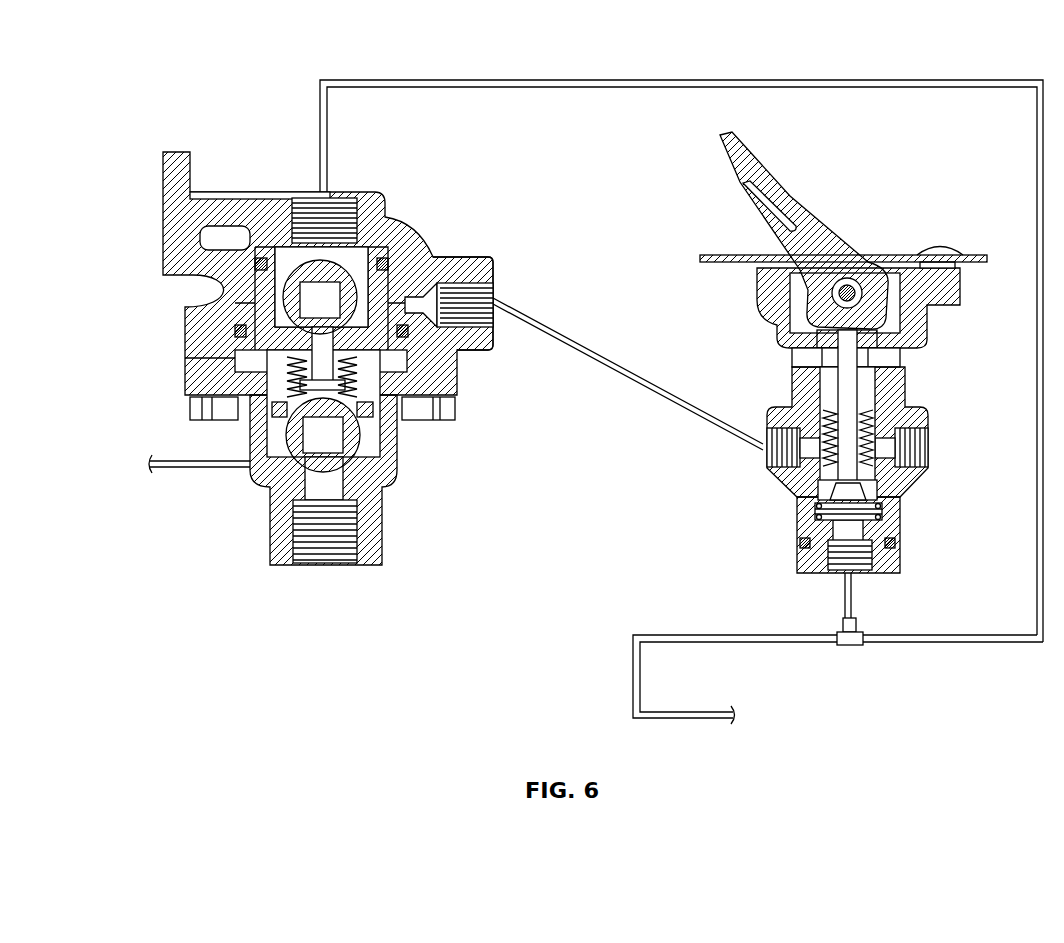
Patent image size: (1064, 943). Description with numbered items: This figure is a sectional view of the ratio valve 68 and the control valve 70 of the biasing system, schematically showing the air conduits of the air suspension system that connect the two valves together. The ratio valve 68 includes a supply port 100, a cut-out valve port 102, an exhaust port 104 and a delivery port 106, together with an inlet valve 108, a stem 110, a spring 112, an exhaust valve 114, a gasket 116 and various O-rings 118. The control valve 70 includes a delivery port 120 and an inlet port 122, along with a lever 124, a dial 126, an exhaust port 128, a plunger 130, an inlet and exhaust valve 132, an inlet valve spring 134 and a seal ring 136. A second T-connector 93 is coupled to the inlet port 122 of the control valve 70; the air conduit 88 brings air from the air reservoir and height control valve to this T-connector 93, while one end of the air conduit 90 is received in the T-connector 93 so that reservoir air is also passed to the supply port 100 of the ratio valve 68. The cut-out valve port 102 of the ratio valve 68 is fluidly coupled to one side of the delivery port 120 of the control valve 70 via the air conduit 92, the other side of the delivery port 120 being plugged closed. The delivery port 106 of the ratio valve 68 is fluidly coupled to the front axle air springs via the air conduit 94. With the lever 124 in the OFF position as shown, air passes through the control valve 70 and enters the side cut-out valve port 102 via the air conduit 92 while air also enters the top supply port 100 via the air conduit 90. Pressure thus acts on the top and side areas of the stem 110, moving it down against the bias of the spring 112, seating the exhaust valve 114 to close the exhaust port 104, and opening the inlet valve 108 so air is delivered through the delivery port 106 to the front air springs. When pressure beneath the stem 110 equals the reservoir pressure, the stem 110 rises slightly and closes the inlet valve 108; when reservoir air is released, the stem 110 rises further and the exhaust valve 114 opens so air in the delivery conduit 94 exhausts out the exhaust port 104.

The ratio valve 68 is at (268, 114).
The control valve 70 is at (902, 150).
The air conduit 88 is at (690, 720).
The air conduit 90 is at (462, 80).
The air conduit 92 is at (588, 378).
The second T-connector 93 is at (848, 645).
The air conduit 94 is at (187, 465).
The supply port 100 is at (338, 193).
The cut-out valve port 102 is at (500, 298).
The exhaust port 104 is at (328, 567).
The delivery port 106 is at (250, 470).
The inlet valve 108 is at (300, 272).
The stem 110 is at (297, 340).
The spring 112 is at (353, 395).
The exhaust valve 114 is at (345, 433).
The gasket 116 is at (183, 357).
The O-rings 118 is at (388, 267).
The delivery port 120 is at (767, 440).
The inlet port 122 is at (886, 586).
The lever 124 is at (770, 183).
The dial 126 is at (875, 257).
The exhaust port 128 is at (900, 358).
The plunger 130 is at (873, 412).
The inlet and exhaust valve 132 is at (875, 490).
The inlet valve spring 134 is at (817, 512).
The seal ring 136 is at (800, 542).